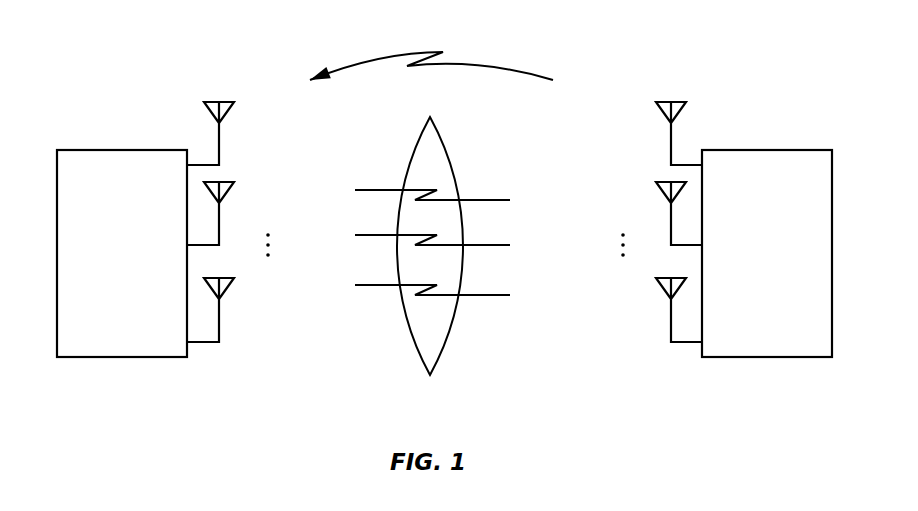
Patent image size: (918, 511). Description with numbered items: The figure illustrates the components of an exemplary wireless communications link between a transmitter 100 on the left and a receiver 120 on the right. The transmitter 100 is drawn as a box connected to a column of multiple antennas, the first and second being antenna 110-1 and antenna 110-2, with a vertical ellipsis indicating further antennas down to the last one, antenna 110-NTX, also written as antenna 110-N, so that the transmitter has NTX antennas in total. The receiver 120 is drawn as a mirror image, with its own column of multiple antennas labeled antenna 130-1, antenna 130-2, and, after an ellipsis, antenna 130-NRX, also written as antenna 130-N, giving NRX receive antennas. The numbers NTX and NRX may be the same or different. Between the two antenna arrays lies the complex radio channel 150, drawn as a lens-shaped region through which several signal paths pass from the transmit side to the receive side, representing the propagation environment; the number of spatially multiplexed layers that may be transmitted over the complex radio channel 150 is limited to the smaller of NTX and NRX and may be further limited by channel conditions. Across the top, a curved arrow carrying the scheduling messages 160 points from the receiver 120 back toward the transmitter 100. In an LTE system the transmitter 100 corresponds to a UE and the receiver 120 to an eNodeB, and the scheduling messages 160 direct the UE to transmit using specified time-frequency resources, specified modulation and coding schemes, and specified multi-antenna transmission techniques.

The transmitter 100 is at (105, 150).
The receiver 120 is at (782, 150).
The antenna 110-1 is at (230, 107).
The antenna 110-2 is at (230, 187).
The antenna 110-NTX is at (253, 310).
The antenna 110-N is at (230, 283).
The antenna 130-1 is at (660, 107).
The antenna 130-2 is at (660, 187).
The antenna 130-NRX is at (629, 310).
The antenna 130-N is at (660, 284).
The complex radio channel 150 is at (440, 133).
The scheduling messages 160 is at (370, 60).